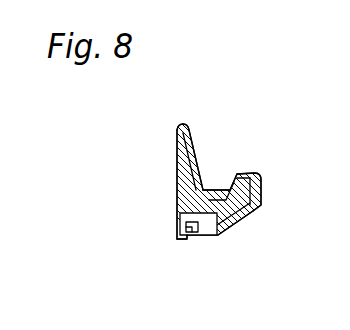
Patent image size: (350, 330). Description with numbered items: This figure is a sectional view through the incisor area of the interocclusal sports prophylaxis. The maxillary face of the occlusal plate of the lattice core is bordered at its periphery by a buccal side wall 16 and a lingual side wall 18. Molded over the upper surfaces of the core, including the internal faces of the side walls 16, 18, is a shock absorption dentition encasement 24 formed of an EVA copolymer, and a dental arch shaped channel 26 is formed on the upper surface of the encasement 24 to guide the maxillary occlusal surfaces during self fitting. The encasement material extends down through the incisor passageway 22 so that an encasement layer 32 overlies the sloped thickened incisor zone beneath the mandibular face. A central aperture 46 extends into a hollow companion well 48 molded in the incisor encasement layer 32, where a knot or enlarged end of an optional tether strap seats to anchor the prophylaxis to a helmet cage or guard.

The buccal side wall 16 is at (177, 141).
The lingual side wall 18 is at (258, 173).
The incisor passageway 22 is at (177, 178).
The dentition encasement 24 is at (213, 114).
The channel 26 is at (216, 180).
The encasement layer 32 is at (238, 217).
The central aperture 46 is at (177, 218).
The companion well 48 is at (207, 236).